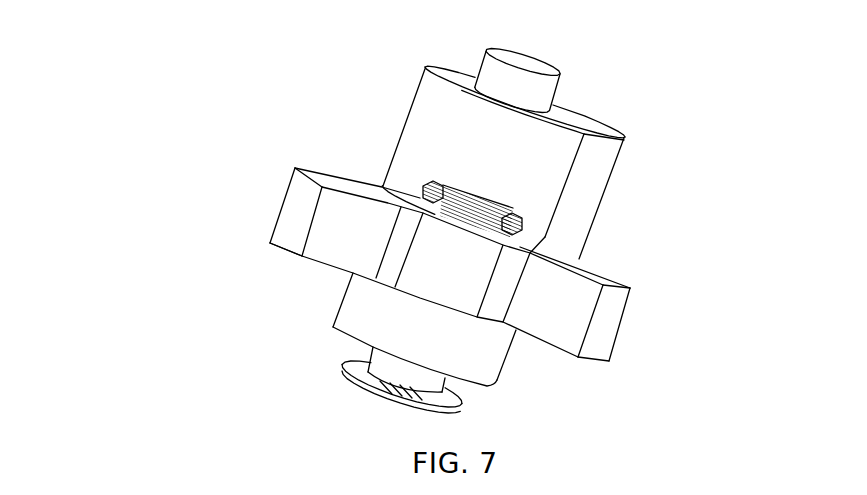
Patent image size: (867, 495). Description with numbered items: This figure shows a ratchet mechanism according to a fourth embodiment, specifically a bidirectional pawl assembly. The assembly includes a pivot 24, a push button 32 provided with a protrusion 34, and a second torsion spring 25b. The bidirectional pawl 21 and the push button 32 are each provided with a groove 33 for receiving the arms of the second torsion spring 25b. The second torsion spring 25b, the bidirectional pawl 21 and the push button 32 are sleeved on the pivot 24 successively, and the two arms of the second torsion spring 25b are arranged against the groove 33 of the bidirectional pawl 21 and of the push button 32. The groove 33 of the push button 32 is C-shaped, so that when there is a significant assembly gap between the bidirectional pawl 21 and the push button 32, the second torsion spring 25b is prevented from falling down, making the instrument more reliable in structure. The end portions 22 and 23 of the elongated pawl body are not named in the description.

The bidirectional pawl 21 is at (357, 180).
The right end block 22 is at (628, 304).
The left end block 23 is at (246, 212).
The pivot 24 is at (558, 81).
The second torsion spring 25b is at (523, 220).
The push button 32 is at (435, 136).
The groove 33 is at (423, 192).
The protrusion 34 is at (600, 165).